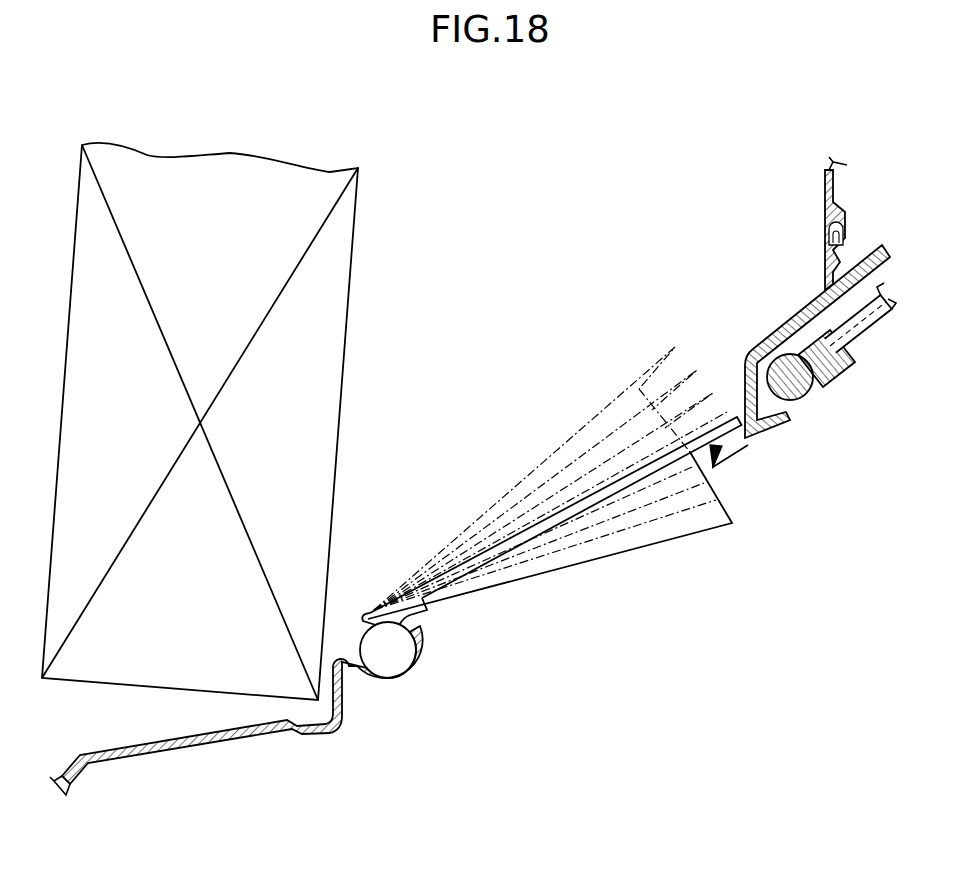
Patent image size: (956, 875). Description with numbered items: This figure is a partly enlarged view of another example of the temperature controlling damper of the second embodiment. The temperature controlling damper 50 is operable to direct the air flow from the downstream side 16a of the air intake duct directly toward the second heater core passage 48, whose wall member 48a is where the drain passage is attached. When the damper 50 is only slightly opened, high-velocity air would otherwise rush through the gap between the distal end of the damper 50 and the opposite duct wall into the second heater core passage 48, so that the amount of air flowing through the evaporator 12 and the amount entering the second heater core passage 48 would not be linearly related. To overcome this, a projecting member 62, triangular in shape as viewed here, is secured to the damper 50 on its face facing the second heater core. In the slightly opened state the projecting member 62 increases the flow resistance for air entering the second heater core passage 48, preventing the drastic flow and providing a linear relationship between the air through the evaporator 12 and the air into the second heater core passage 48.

The evaporator 12 is at (351, 312).
The downstream side of the air intake duct 16a is at (456, 399).
The second heater core passage 48 is at (236, 804).
The wall member 48a is at (119, 760).
The temperature controlling damper 50 is at (517, 541).
The projecting member 62 is at (700, 534).